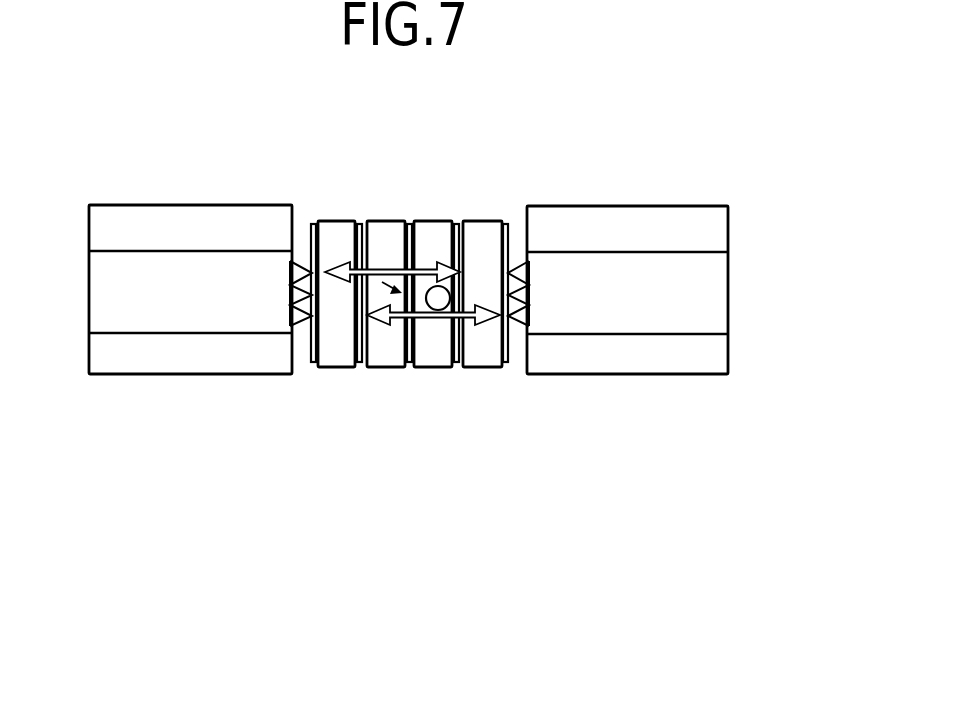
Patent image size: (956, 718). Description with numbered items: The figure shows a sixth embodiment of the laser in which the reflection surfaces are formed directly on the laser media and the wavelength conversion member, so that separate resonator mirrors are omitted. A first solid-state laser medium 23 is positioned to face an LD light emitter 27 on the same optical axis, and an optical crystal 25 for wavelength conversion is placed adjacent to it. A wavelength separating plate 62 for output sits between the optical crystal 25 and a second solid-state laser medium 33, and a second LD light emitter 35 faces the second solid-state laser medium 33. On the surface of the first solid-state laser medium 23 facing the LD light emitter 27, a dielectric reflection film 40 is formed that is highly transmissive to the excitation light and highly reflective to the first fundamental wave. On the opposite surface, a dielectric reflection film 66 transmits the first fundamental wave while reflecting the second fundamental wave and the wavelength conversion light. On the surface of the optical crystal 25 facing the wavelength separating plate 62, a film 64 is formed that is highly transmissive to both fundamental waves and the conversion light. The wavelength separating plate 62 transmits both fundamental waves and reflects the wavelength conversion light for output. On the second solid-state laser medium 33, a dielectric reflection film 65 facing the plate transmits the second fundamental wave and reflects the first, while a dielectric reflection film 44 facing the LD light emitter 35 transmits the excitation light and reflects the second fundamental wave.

The LD light emitter 27 is at (135, 205).
The LD light emitter 35 is at (637, 205).
The dielectric reflection film 40 is at (300, 218).
The first solid-state laser medium 23 is at (337, 218).
The dielectric reflection film 66 is at (360, 218).
The optical crystal for wavelength conversion 25 is at (370, 368).
The film 64 is at (407, 218).
The wavelength separating plate for output 62 is at (433, 368).
The dielectric reflection film 65 is at (453, 218).
The second solid-state laser medium 33 is at (477, 368).
The dielectric reflection film 44 is at (513, 222).